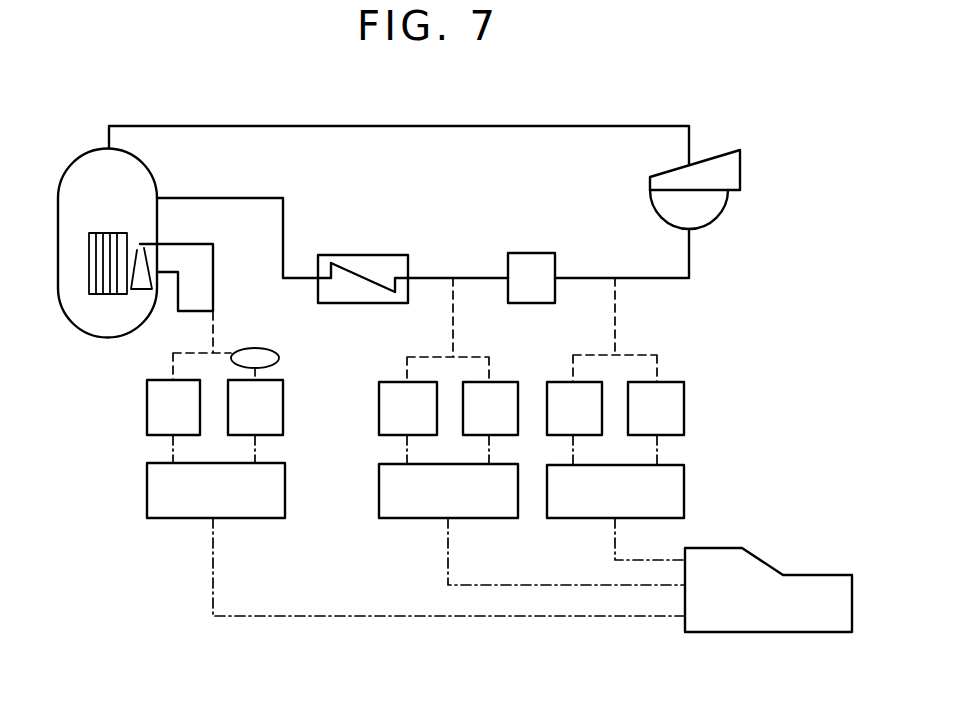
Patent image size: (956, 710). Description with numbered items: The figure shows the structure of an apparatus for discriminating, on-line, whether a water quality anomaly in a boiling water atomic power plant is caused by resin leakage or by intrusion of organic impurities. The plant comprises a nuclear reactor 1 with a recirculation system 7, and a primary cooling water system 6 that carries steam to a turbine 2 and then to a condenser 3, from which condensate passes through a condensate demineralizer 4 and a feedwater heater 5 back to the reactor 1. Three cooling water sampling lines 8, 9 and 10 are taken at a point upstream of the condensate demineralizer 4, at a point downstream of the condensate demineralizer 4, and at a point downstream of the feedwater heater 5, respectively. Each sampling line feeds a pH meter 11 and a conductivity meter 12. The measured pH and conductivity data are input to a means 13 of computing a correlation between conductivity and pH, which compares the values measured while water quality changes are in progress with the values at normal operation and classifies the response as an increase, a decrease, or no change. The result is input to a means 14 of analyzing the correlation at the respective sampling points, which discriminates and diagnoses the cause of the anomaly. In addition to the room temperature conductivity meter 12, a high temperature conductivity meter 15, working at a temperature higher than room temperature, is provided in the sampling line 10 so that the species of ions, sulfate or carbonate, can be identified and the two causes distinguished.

The nuclear reactor 1 is at (90, 150).
The turbine 2 is at (722, 152).
The condenser 3 is at (728, 212).
The condensate demineralizer 4 is at (537, 253).
The feedwater heater 5 is at (388, 255).
The primary cooling water system 6 is at (412, 126).
The recirculation system 7 is at (213, 253).
The cooling water sampling line 8 is at (617, 325).
The cooling water sampling line 9 is at (455, 330).
The cooling water sampling line 10 is at (215, 322).
The pH meter 11 is at (147, 387).
The conductivity meter 12 is at (283, 420).
The means of computing a correlation 13 is at (147, 493).
The means of analyzing the correlation 14 is at (755, 634).
The high temperature conductivity meter 15 is at (279, 356).